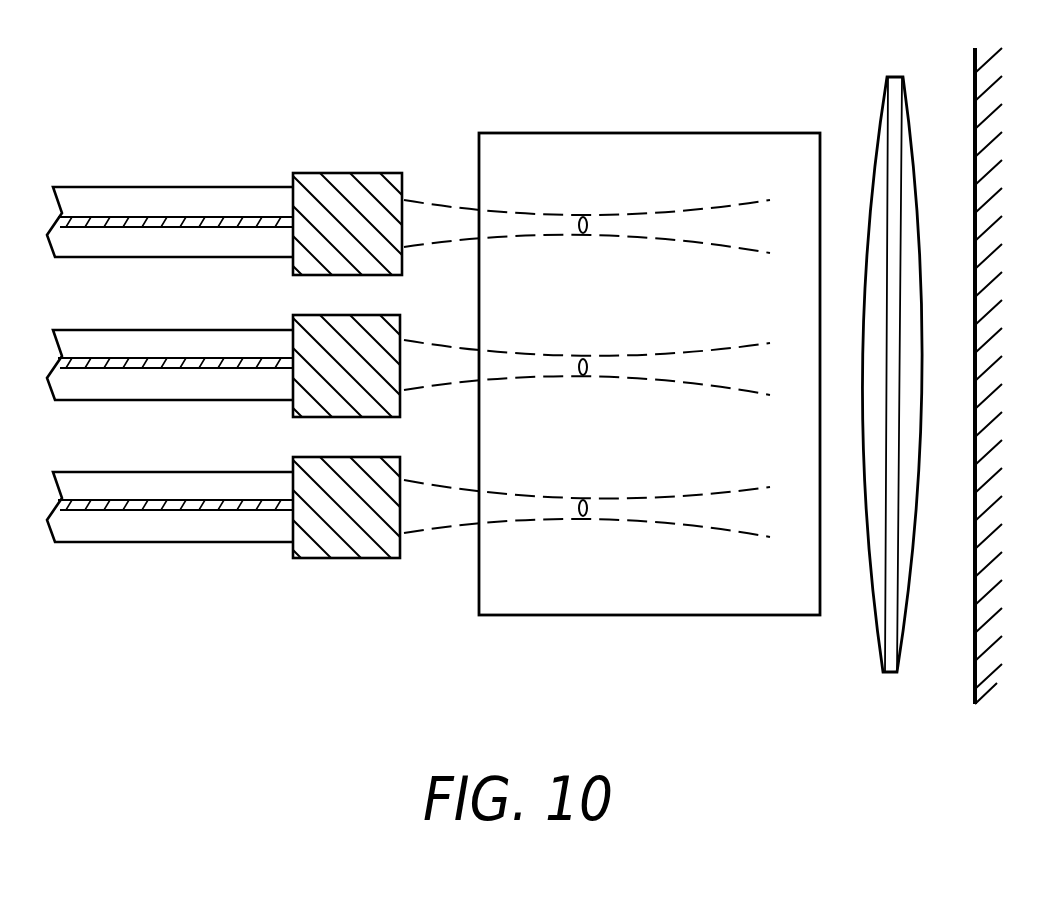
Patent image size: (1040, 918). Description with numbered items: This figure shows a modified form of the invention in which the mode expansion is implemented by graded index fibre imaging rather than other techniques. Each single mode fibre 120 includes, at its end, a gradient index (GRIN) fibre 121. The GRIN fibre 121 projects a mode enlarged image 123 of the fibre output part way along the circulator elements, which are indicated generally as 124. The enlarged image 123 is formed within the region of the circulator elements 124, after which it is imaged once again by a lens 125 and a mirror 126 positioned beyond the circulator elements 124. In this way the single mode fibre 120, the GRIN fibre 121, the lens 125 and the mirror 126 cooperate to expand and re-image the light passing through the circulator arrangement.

The single mode fibre 120 is at (142, 188).
The gradient index (GRIN) fibre 121 is at (340, 173).
The mode enlarged image 123 is at (595, 137).
The circulator elements 124 is at (558, 615).
The lens 125 is at (883, 672).
The mirror 126 is at (975, 680).